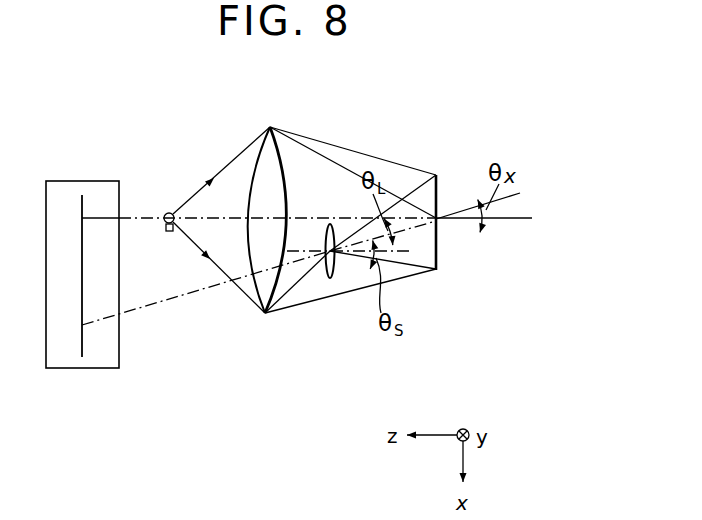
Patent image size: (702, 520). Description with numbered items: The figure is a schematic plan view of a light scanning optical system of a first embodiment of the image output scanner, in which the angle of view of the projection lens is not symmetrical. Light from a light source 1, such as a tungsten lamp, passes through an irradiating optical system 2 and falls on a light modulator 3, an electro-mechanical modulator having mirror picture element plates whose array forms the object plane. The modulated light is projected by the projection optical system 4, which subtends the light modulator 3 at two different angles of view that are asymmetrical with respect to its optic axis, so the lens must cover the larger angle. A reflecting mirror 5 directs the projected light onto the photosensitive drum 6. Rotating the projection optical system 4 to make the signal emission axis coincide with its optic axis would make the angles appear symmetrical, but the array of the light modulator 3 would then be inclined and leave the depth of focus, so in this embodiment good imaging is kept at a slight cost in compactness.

The light source 1 is at (169, 212).
The irradiating optical system 2 is at (271, 170).
The light modulator 3 is at (438, 250).
The projection optical system 4 is at (330, 276).
The reflecting mirror 5 is at (80, 207).
The photosensitive drum 6 is at (80, 368).